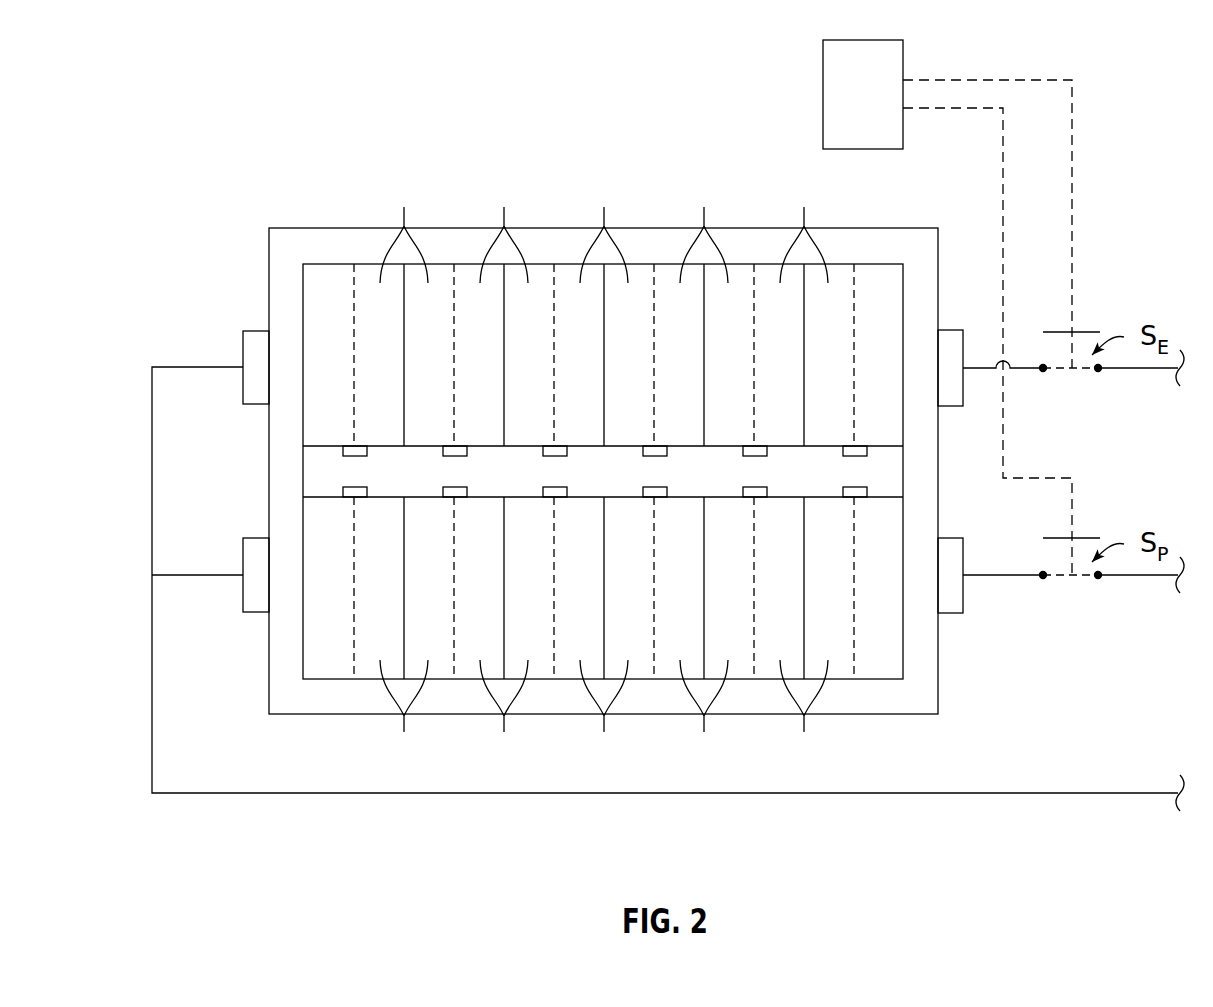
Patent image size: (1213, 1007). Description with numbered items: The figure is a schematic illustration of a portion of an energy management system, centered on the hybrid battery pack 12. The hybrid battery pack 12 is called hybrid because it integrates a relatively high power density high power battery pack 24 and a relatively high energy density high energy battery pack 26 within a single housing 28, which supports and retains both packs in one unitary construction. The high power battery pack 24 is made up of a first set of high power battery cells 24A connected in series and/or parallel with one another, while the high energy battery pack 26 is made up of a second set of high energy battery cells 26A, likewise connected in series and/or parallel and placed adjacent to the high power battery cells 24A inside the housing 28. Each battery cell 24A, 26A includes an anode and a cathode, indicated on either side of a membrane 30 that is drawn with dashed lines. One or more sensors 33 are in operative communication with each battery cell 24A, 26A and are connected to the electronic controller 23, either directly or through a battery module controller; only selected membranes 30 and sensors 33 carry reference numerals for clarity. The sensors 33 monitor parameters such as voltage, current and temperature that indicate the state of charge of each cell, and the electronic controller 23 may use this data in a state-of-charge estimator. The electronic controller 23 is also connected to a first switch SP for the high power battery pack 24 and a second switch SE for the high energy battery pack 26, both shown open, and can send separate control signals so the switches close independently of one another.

The hybrid battery pack 12 is at (909, 171).
The electronic controller 23 is at (848, 108).
The high power battery pack 24 is at (331, 659).
The high power battery cells 24A is at (604, 714).
The high energy battery pack 26 is at (331, 284).
The high energy battery cells 26A is at (604, 230).
The housing 28 is at (650, 228).
The membrane 30 is at (454, 303).
The sensors 33 is at (343, 491).